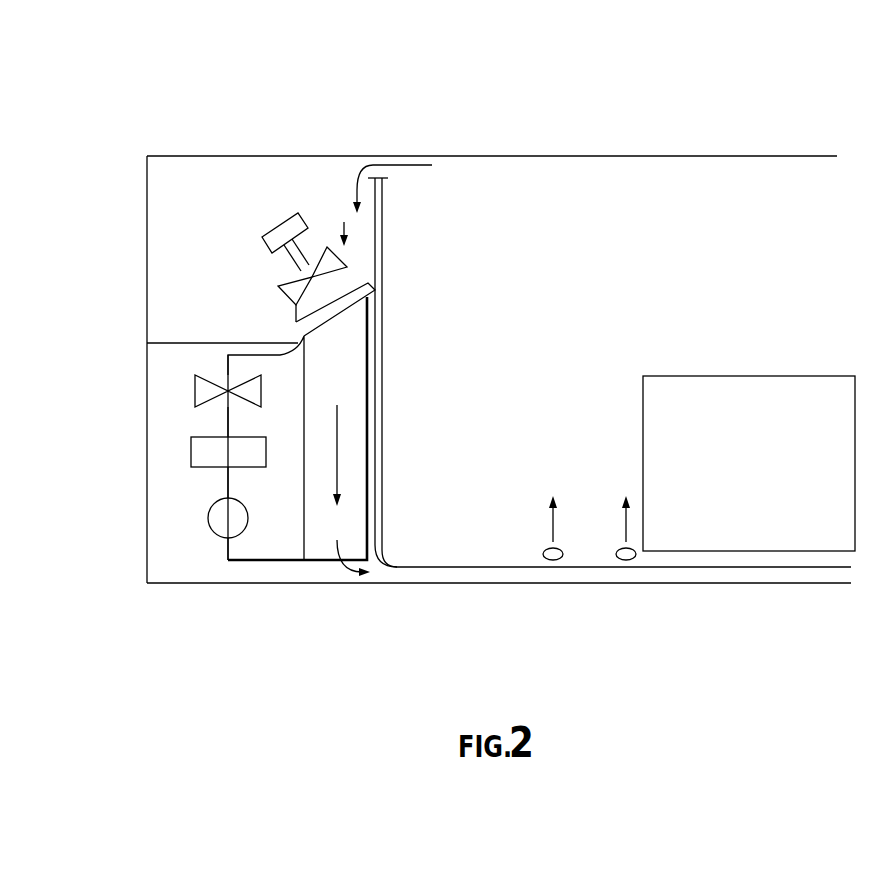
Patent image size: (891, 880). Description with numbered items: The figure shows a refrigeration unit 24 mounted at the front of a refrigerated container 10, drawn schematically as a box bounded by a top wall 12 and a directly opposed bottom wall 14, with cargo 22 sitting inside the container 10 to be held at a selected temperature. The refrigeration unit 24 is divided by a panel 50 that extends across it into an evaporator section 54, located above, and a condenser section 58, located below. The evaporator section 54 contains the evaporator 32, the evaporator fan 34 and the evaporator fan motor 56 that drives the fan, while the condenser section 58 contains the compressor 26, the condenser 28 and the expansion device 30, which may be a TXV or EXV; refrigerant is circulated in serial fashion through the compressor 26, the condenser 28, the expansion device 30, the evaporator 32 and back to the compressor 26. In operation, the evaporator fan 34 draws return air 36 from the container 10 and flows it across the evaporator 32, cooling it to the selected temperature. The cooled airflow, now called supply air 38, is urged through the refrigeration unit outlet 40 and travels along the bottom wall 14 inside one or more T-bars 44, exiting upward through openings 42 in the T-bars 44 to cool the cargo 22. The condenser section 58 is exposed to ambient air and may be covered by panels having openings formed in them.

The refrigerated container 10 is at (424, 107).
The top wall 12 is at (625, 155).
The bottom wall 14 is at (617, 583).
The cargo 22 is at (734, 474).
The refrigeration unit 24 is at (94, 492).
The compressor 26 is at (213, 537).
The condenser 28 is at (190, 450).
The expansion device 30 is at (195, 392).
The evaporator 32 is at (296, 323).
The evaporator fan 34 is at (278, 284).
The return air 36 is at (342, 218).
The supply air 38 is at (337, 453).
The refrigeration unit outlet 40 is at (390, 562).
The openings 42 is at (543, 552).
The T-bars 44 is at (530, 583).
The panel 50 is at (304, 388).
The evaporator section 54 is at (163, 243).
The evaporator fan motor 56 is at (280, 225).
The condenser section 58 is at (165, 507).